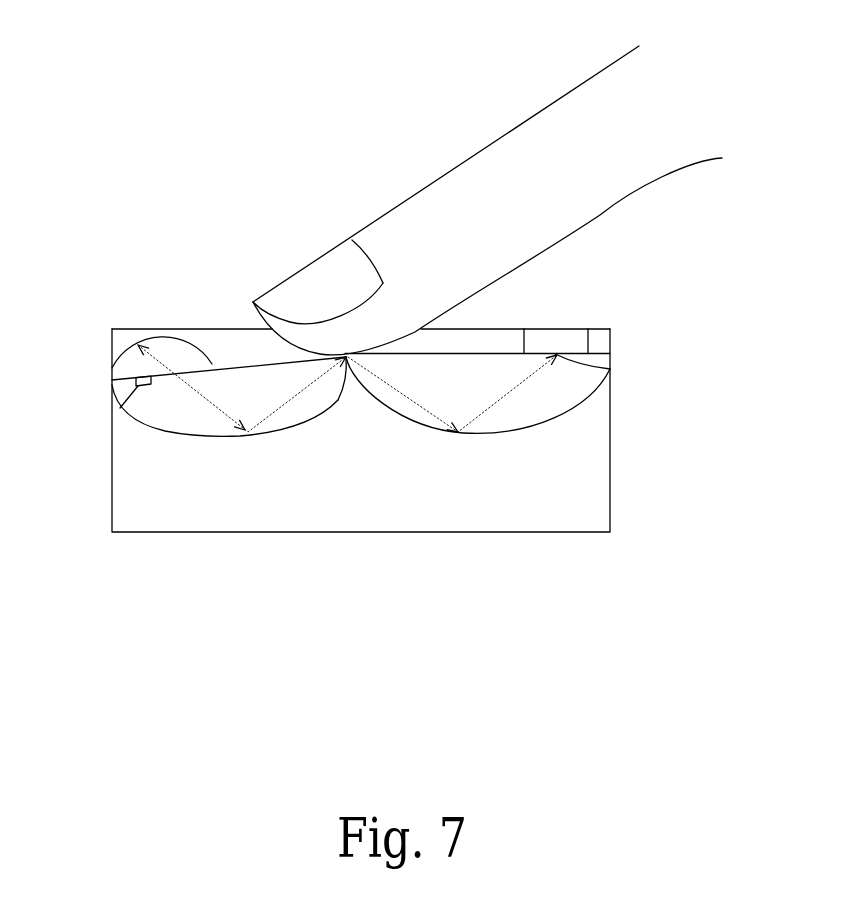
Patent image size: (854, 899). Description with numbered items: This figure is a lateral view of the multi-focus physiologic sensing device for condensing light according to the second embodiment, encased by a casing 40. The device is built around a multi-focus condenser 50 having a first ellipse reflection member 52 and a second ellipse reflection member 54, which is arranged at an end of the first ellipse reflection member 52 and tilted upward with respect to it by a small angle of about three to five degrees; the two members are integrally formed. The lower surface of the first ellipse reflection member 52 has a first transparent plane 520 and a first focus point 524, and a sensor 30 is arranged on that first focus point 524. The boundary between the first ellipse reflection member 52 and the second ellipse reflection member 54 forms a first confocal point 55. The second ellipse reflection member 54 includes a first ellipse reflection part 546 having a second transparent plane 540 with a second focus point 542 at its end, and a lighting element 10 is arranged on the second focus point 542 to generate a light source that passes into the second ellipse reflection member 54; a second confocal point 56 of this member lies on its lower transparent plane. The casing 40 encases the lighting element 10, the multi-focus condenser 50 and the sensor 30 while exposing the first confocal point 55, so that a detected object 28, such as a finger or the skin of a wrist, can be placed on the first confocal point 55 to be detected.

The detected object 28 is at (442, 205).
The second transparent plane 540 is at (278, 364).
The second confocal point 56 is at (177, 370).
The first ellipse reflection part 546 is at (127, 363).
The second focus point 542 is at (135, 383).
The lighting element 10 is at (120, 408).
The second ellipse reflection member 54 is at (158, 426).
The first confocal point 55 is at (343, 404).
The first ellipse reflection member 52 is at (572, 405).
The first focus point 524 is at (612, 368).
The first transparent plane 520 is at (490, 352).
The sensor 30 is at (562, 340).
The multi-focus condenser 50 is at (437, 450).
The casing 40 is at (468, 533).